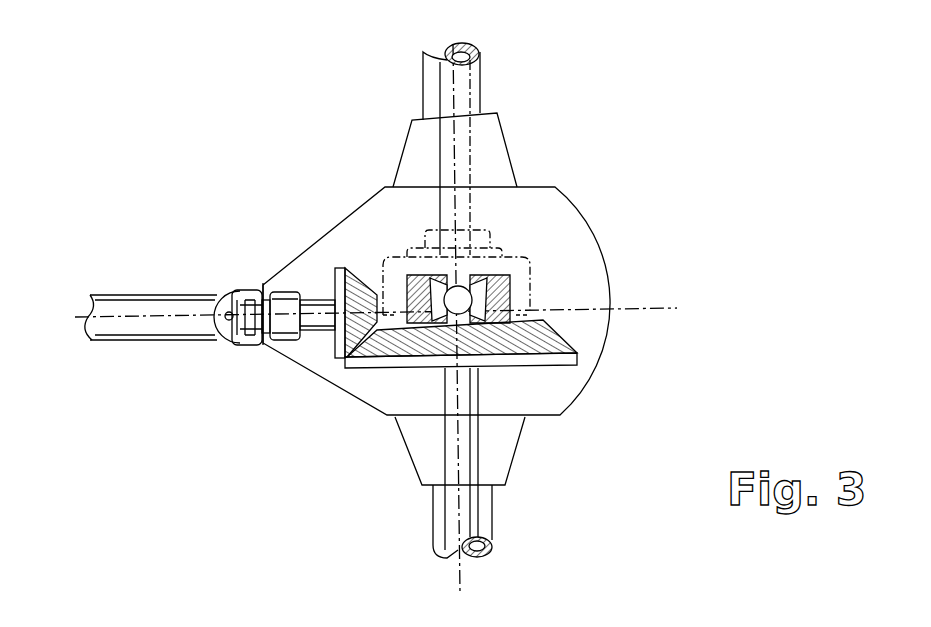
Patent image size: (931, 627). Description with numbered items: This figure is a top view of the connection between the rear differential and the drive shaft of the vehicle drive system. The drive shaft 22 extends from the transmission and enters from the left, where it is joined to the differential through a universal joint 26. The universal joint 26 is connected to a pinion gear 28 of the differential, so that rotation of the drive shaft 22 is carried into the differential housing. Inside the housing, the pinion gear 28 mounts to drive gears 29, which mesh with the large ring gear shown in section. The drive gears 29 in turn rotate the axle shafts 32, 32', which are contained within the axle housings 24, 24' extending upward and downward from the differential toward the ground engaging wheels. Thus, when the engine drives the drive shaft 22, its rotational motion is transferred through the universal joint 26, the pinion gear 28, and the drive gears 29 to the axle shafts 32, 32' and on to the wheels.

The drive shaft 22 is at (203, 295).
The axle housing 24 is at (489, 521).
The axle housing 24' is at (487, 86).
The universal joint 26 is at (243, 351).
The pinion gear 28 is at (317, 300).
The drive gears 29 is at (532, 245).
The axle shaft 32 is at (500, 459).
The axle shaft 32' is at (502, 149).